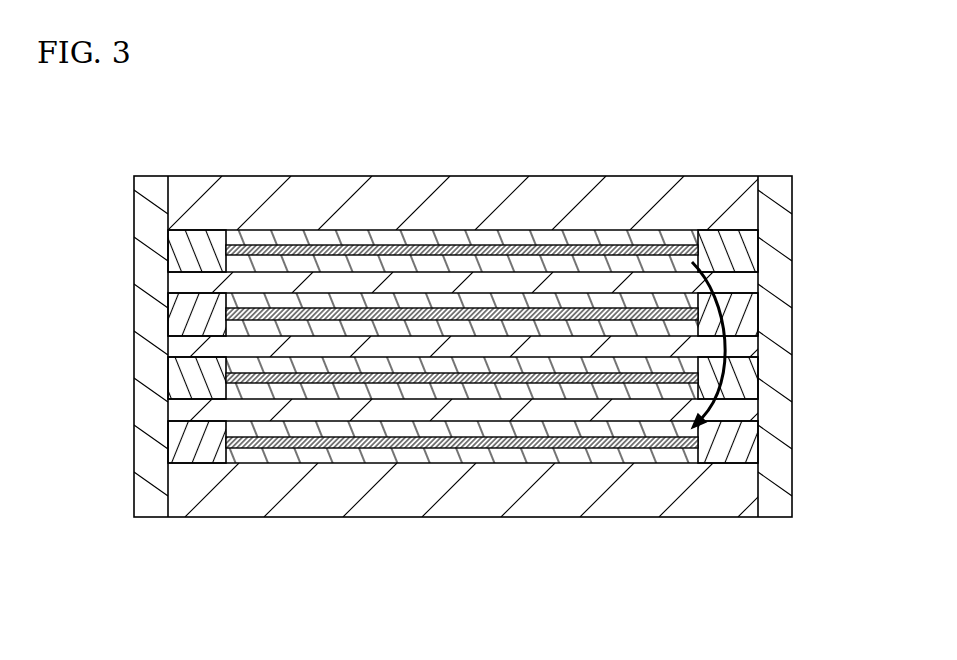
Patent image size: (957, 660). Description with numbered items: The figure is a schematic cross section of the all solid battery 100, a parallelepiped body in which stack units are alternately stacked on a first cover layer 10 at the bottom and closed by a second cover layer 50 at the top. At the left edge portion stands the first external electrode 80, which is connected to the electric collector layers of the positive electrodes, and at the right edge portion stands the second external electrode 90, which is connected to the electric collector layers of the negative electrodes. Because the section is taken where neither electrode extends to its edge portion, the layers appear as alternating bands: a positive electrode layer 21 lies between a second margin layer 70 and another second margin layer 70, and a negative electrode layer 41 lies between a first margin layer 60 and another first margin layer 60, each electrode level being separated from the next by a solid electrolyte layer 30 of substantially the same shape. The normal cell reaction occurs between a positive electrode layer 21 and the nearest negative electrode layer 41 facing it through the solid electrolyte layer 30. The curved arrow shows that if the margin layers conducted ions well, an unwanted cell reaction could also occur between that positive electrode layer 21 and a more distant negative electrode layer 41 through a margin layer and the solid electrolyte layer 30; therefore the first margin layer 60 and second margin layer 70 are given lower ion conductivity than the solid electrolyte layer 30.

The all solid battery 100 is at (840, 140).
The first cover layer 10 is at (388, 506).
The second cover layer 50 is at (325, 190).
The first external electrode 80 is at (148, 213).
The second external electrode 90 is at (780, 229).
The second margin layer 70 is at (466, 262).
The first margin layer 60 is at (466, 447).
The solid electrolyte layer 30 is at (190, 347).
The negative electrode layer 41 is at (612, 263).
The positive electrode layer 21 is at (595, 450).